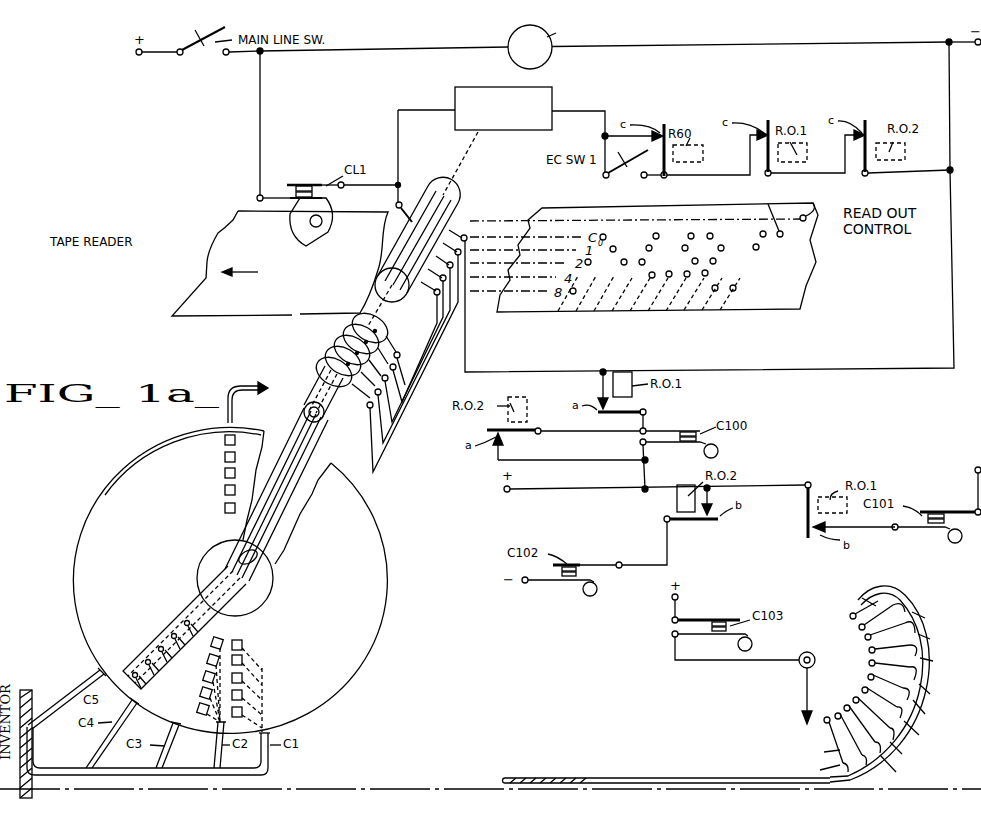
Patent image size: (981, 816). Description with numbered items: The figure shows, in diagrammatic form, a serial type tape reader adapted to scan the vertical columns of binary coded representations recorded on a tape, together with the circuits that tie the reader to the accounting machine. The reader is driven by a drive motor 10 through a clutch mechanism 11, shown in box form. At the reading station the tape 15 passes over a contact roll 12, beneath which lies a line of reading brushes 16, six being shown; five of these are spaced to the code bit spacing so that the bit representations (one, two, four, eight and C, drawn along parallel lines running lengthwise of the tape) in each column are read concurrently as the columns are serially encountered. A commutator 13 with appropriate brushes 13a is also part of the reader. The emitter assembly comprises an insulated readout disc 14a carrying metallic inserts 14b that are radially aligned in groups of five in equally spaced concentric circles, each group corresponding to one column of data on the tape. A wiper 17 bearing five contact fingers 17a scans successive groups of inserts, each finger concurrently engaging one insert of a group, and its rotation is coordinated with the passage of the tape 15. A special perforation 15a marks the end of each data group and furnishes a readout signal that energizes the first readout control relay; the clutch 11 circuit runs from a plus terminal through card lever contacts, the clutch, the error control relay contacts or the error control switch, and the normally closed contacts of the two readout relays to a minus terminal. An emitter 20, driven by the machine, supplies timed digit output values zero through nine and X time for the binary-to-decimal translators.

The drive motor 10 is at (510, 52).
The clutch mechanism 11 is at (458, 91).
The contact roll 12 is at (447, 207).
The commutator 13 is at (352, 345).
The brushes 13a is at (390, 350).
The insulated readout disc 14a is at (112, 488).
The metallic inserts 14b is at (225, 473).
The tape 15 is at (590, 212).
The special perforation 15a is at (806, 216).
The reading brushes 16 is at (466, 234).
The wiper 17 is at (152, 645).
The contact fingers 17a is at (168, 672).
The emitter 20 is at (751, 719).